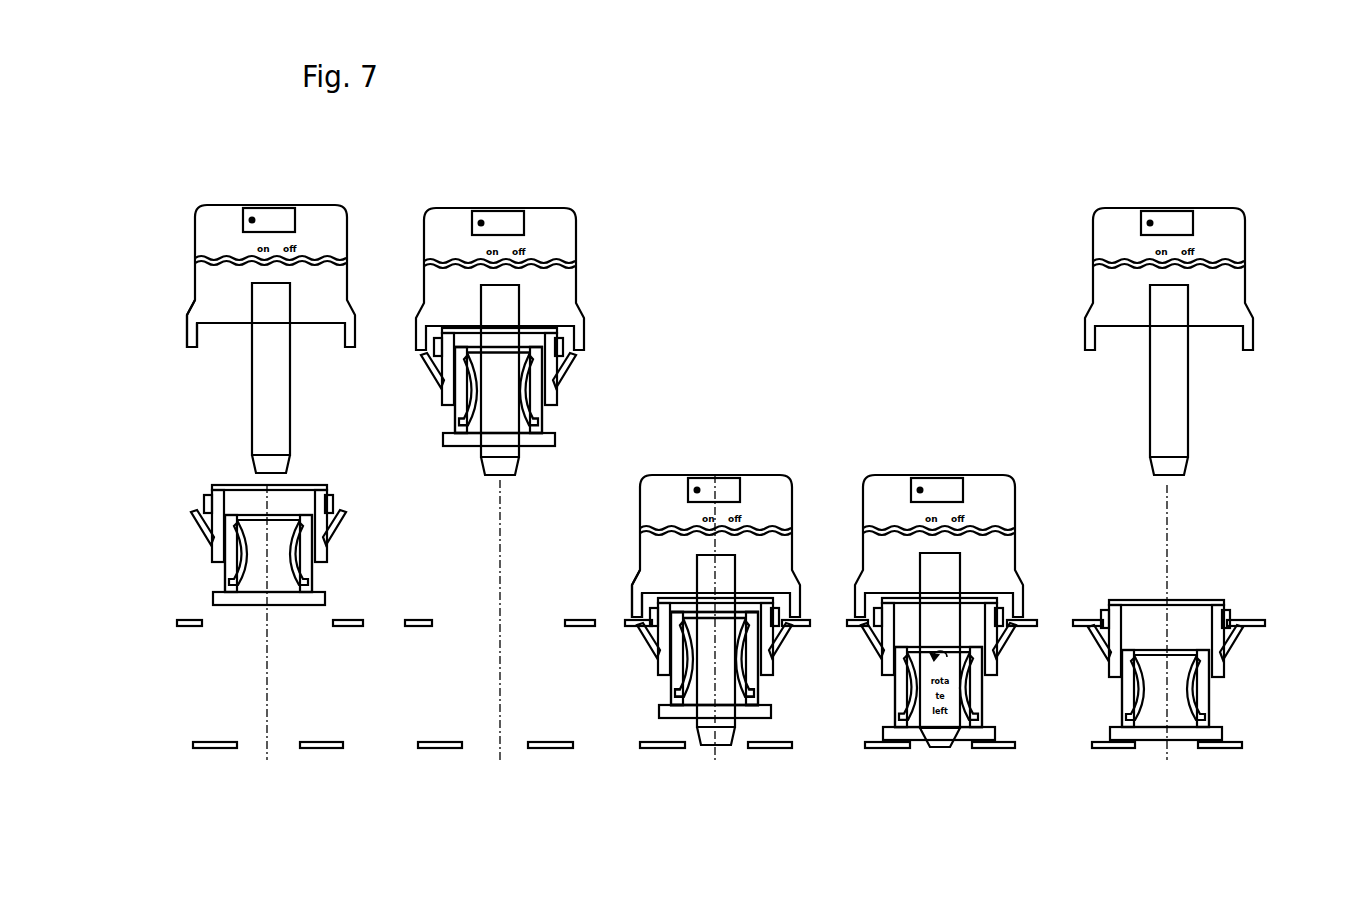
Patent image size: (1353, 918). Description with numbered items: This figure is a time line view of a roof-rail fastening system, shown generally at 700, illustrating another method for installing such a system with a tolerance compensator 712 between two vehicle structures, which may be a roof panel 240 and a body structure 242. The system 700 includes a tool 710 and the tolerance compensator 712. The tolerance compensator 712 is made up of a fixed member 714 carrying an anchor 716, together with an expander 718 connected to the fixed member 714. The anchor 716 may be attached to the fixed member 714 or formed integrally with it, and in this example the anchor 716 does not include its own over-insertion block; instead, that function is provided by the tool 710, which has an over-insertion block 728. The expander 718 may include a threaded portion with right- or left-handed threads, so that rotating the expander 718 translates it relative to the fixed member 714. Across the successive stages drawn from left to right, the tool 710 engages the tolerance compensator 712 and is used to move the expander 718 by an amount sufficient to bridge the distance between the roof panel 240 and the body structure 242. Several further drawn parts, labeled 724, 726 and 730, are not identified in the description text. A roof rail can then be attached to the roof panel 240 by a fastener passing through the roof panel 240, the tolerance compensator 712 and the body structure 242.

The method for installing a roof rail fastening system 700 is at (728, 248).
The tool 710 is at (195, 285).
The tolerance compensator 712 is at (245, 528).
The fixed member 714 is at (328, 492).
The anchor 716 is at (193, 530).
The expander 718 is at (313, 574).
The connector 724 is at (532, 428).
The stem 726 is at (500, 412).
The over-insertion block 728 is at (188, 347).
The spring contact 730 is at (900, 702).
The roof panel 240 is at (177, 622).
The body structure 242 is at (193, 746).